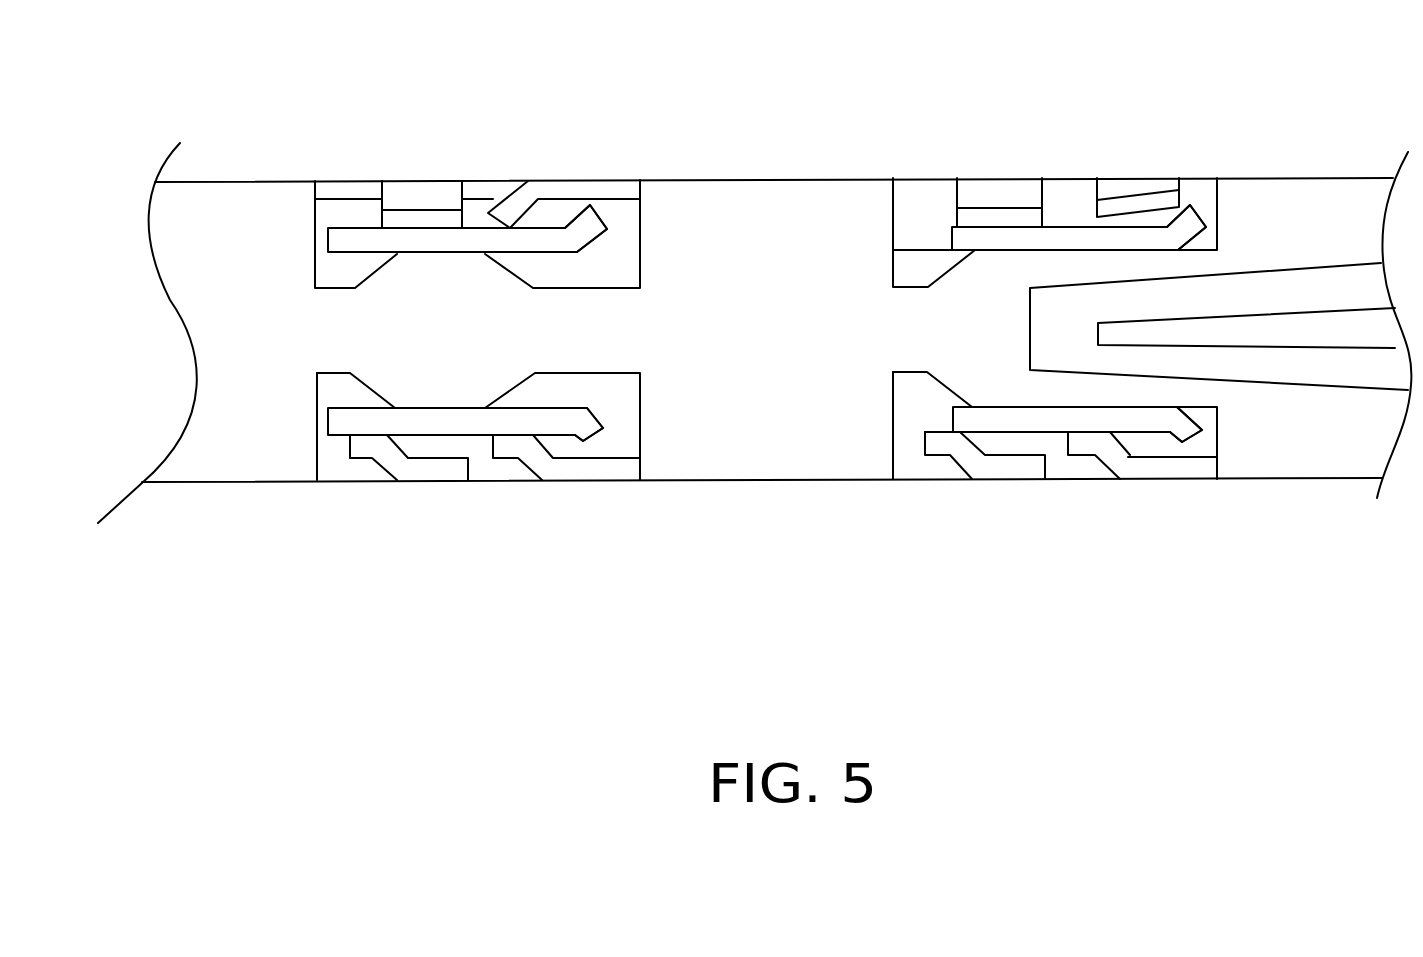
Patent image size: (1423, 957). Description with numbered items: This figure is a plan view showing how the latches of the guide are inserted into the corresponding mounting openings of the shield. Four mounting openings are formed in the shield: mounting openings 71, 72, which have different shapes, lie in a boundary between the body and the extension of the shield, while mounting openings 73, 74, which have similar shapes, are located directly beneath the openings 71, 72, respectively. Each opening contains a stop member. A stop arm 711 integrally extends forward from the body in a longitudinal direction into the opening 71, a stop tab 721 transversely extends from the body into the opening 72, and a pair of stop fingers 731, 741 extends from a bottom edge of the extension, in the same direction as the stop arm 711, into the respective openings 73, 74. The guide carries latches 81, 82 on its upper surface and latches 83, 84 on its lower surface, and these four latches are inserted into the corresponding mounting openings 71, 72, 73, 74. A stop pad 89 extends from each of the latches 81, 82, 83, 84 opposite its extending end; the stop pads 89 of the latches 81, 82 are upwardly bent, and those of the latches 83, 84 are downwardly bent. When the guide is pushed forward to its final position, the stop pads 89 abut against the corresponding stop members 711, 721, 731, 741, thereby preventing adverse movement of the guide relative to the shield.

The mounting opening 71 is at (623, 253).
The stop arm 711 is at (593, 192).
The mounting opening 72 is at (1202, 197).
The stop tab 721 is at (1125, 190).
The mounting opening 73 is at (625, 410).
The stop finger 731 is at (588, 470).
The mounting opening 74 is at (1210, 418).
The stop finger 741 is at (1155, 470).
The latch 81 is at (347, 237).
The latch 82 is at (965, 237).
The latch 83 is at (352, 420).
The latch 84 is at (967, 418).
The stop pad 89 is at (585, 227).